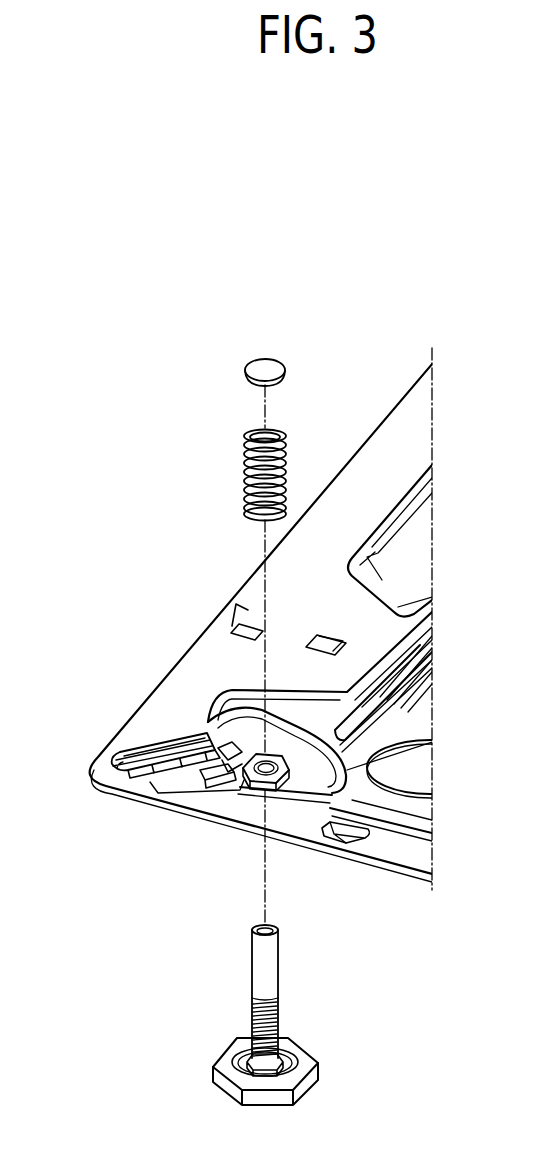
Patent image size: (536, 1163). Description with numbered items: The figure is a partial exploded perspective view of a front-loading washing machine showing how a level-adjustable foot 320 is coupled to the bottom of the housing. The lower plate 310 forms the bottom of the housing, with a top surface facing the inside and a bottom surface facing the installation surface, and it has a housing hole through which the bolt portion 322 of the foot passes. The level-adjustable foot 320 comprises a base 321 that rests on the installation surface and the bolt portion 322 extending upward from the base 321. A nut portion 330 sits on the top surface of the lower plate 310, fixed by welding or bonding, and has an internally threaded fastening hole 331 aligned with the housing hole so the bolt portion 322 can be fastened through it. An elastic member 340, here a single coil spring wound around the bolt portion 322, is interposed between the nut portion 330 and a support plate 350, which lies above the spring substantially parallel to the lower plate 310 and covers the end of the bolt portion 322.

The lower plate 310 is at (207, 640).
The level-adjustable foot 320 is at (187, 1015).
The base 321 is at (220, 1071).
The bolt portion 322 is at (252, 972).
The nut portion 330 is at (243, 780).
The fastening hole 331 is at (197, 733).
The elastic member 340 is at (245, 457).
The support plate 350 is at (247, 373).